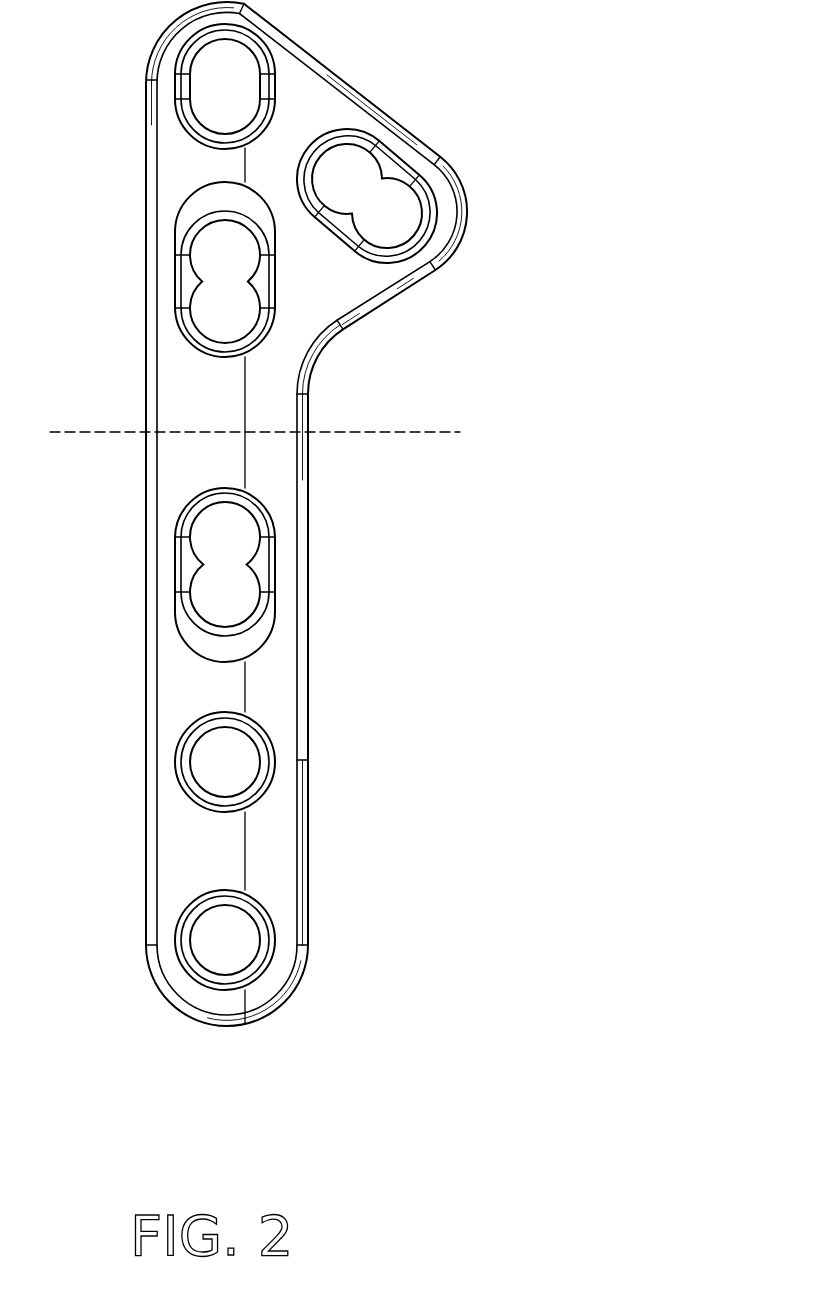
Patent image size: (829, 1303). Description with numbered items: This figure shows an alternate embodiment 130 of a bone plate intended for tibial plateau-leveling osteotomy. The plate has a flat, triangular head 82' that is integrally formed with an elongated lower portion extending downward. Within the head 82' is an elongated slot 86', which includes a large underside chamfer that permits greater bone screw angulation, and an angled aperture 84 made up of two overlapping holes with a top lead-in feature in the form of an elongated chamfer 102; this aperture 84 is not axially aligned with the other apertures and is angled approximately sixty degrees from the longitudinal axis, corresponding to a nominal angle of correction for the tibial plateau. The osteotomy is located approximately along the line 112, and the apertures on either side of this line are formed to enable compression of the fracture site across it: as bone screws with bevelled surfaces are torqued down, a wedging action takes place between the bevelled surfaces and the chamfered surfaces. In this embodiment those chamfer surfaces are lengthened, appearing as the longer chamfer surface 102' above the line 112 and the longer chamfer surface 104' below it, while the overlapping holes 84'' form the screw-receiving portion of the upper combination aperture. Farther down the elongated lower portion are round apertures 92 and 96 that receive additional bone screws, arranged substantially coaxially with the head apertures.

The alternate embodiment 130 is at (498, 77).
The flat triangular head 82' is at (389, 192).
The elongated slot 86' is at (289, 75).
The elongated chamfer 102 is at (403, 187).
The aperture 84 is at (433, 196).
The longer chamfer surface 102' is at (162, 250).
The apertures 84'' is at (164, 300).
The longer chamfer surface 104' is at (155, 594).
The aperture 92 is at (262, 745).
The aperture 96 is at (262, 920).
The line 112 is at (432, 432).